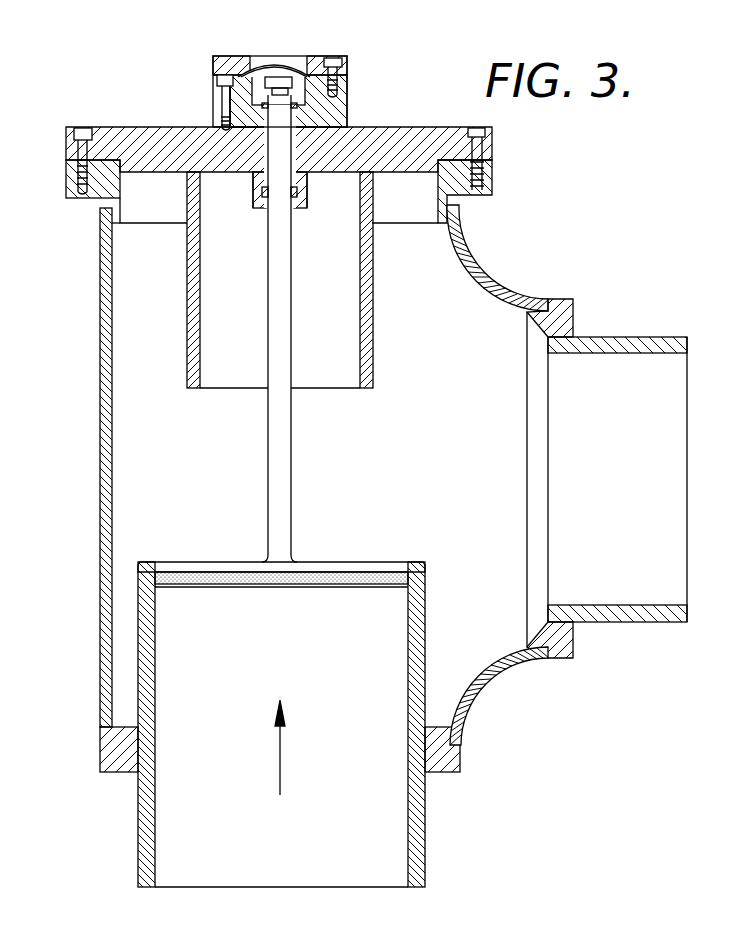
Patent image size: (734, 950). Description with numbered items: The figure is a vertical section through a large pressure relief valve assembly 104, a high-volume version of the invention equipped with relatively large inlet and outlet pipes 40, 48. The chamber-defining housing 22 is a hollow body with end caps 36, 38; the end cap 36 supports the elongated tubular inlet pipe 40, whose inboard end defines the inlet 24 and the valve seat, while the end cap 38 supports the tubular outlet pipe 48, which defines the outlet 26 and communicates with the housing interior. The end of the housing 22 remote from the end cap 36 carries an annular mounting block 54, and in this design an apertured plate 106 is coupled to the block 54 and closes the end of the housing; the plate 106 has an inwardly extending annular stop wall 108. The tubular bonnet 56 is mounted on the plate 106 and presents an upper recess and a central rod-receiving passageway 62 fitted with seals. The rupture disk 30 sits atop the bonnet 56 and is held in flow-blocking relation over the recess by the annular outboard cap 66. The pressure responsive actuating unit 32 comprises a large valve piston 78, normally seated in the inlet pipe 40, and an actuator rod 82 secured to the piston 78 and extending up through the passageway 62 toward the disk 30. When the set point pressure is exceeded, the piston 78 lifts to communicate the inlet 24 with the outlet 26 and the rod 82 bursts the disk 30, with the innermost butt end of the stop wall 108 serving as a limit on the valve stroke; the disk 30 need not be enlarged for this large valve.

The housing 22 is at (518, 270).
The inlet 24 is at (448, 833).
The outlet 26 is at (644, 312).
The rupture disk 30 is at (292, 54).
The pressure responsive actuating unit 32 is at (395, 478).
The end cap 36 is at (450, 770).
The end cap 38 is at (573, 640).
The inlet pipe 40 is at (250, 856).
The outlet pipe 48 is at (650, 620).
The mounting block 54 is at (70, 197).
The bonnet 56 is at (217, 101).
The rod-receiving passageway 62 is at (303, 188).
The outboard cap 66 is at (345, 72).
The piston 78 is at (368, 568).
The actuator rod 82 is at (277, 365).
The large valve assembly 104 is at (565, 175).
The apertured plate 106 is at (405, 135).
The annular stop wall 108 is at (370, 353).